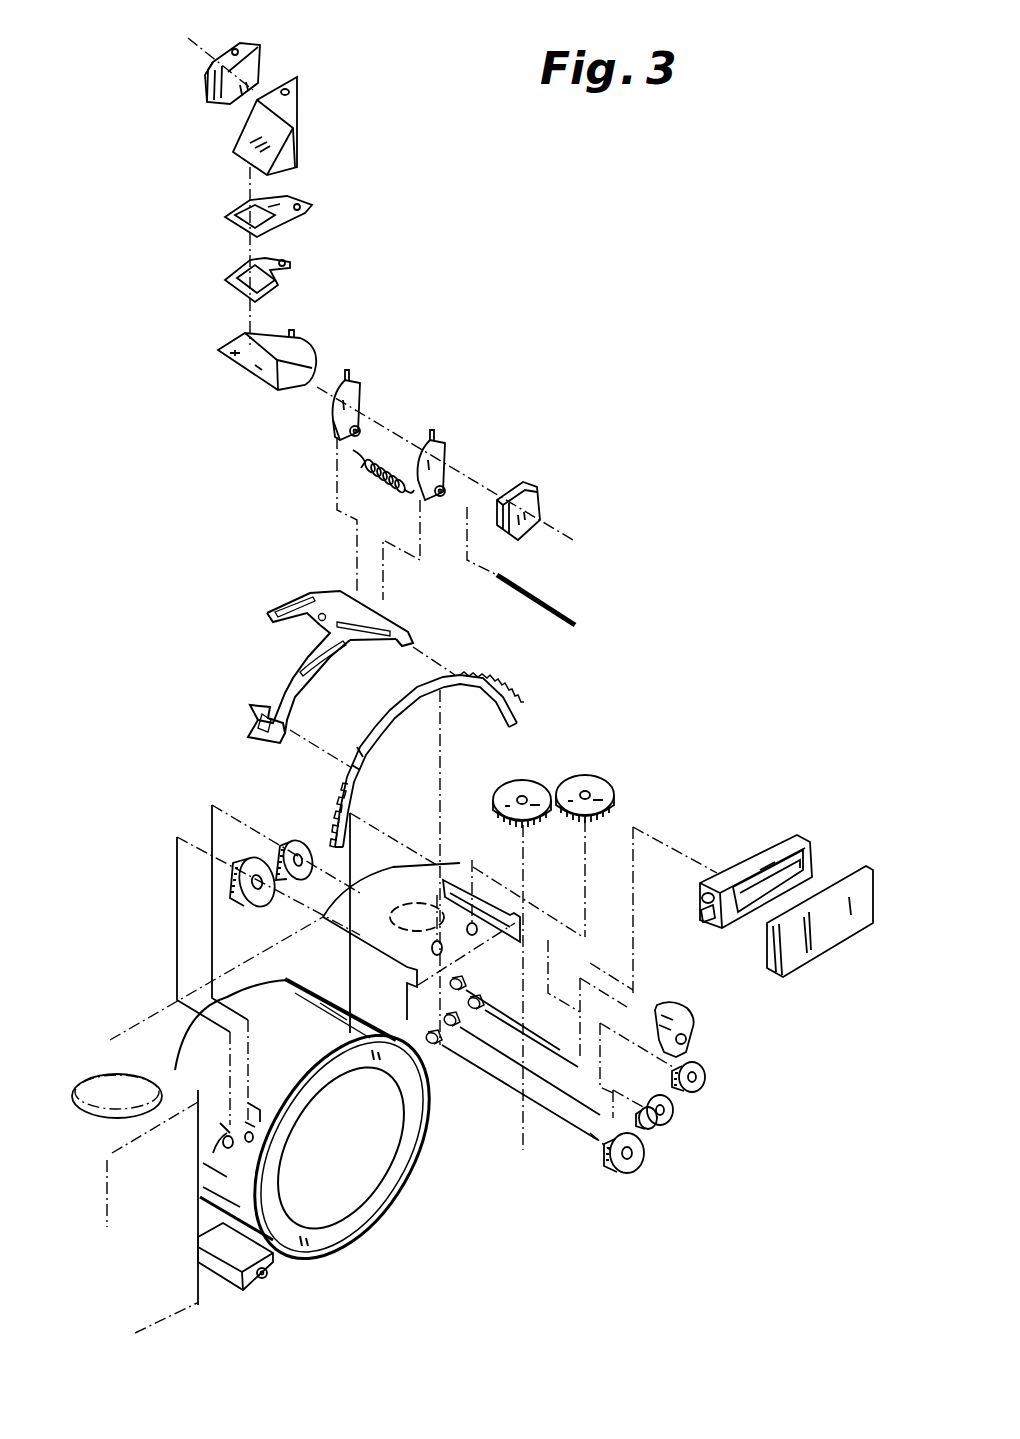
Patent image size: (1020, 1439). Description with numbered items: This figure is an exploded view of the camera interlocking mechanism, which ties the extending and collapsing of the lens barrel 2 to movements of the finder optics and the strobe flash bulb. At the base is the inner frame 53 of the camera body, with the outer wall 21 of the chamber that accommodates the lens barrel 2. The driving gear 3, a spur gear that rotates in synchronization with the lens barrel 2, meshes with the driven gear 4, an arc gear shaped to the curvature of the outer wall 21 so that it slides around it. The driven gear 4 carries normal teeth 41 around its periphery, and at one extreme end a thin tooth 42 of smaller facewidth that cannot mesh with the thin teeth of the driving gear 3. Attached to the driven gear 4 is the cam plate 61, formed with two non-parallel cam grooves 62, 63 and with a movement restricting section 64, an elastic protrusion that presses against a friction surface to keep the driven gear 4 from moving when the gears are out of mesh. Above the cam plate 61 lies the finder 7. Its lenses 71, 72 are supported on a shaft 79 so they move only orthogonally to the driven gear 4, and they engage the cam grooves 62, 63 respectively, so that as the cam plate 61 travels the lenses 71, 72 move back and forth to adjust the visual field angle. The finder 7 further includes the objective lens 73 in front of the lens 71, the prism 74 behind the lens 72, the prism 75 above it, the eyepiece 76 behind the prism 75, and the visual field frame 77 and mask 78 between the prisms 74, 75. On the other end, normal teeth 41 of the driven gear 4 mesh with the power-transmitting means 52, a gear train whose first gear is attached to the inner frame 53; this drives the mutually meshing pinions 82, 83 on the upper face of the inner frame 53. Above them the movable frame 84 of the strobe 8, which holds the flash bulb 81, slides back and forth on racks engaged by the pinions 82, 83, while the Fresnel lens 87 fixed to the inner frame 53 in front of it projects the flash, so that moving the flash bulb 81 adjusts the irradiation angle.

The lens barrel 2 is at (340, 1227).
The outer wall 21 is at (287, 1233).
The driving gear 3 is at (292, 842).
The driven gear 4 is at (387, 727).
The third teeth 41 is at (520, 707).
The thin tooth 42 is at (272, 885).
The power-transmitting means 52 is at (757, 1033).
The inner frame 53 is at (137, 1030).
The cam plate 61 is at (300, 626).
The cam groove 62 is at (358, 642).
The cam groove 63 is at (320, 600).
The movement restricting section 64 is at (252, 706).
The finder 7 is at (420, 357).
The lens 71 is at (440, 440).
The lens 72 is at (355, 393).
The objective lens 73 is at (535, 500).
The prism 74 is at (298, 370).
The prism 75 is at (247, 133).
The eyepiece 76 is at (260, 40).
The visual field frame 77 is at (290, 277).
The mask 78 is at (315, 210).
The shaft 79 is at (577, 612).
The strobe 8 is at (715, 781).
The flash bulb 81 is at (788, 842).
The pinion 82 is at (530, 790).
The pinion 83 is at (600, 788).
The movable frame 84 is at (742, 862).
The Fresnel lens 87 is at (830, 932).